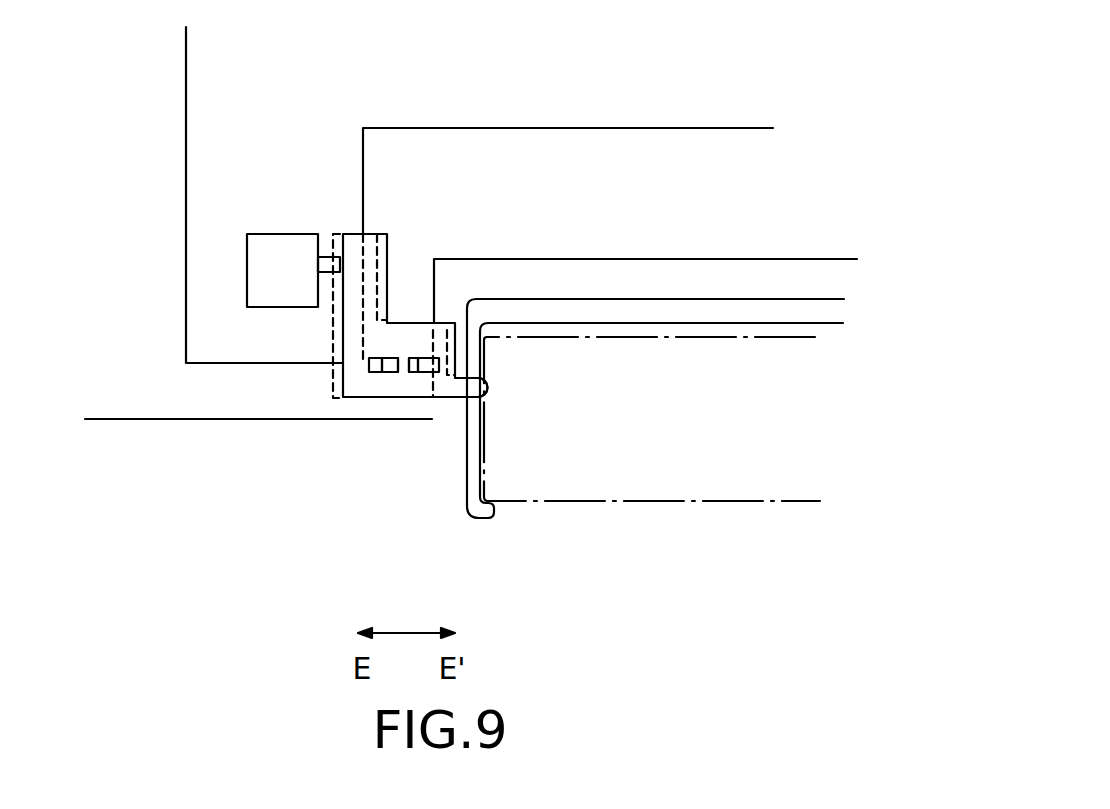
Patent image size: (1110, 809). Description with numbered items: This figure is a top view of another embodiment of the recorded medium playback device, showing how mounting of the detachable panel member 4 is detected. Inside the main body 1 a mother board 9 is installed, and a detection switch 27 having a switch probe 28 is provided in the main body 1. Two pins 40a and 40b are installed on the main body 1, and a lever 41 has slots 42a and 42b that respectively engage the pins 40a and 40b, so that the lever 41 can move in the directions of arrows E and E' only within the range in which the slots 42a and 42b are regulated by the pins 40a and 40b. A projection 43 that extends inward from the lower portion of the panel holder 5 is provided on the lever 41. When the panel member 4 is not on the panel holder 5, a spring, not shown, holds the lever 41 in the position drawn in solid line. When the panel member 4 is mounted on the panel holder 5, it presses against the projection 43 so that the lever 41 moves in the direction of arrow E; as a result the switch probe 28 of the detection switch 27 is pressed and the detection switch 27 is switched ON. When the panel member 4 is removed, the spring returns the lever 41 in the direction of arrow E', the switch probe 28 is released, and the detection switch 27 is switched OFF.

The mother board 9 is at (200, 86).
The main body 1 is at (97, 422).
The detection switch 27 is at (247, 257).
The switch probe 28 is at (327, 249).
The lever 41 is at (343, 375).
The pin 40a is at (377, 372).
The slot 42a is at (389, 372).
The pin 40b is at (428, 372).
The slot 42b is at (413, 372).
The projection 43 is at (487, 396).
The panel holder 5 is at (479, 522).
The panel member 4 is at (641, 488).